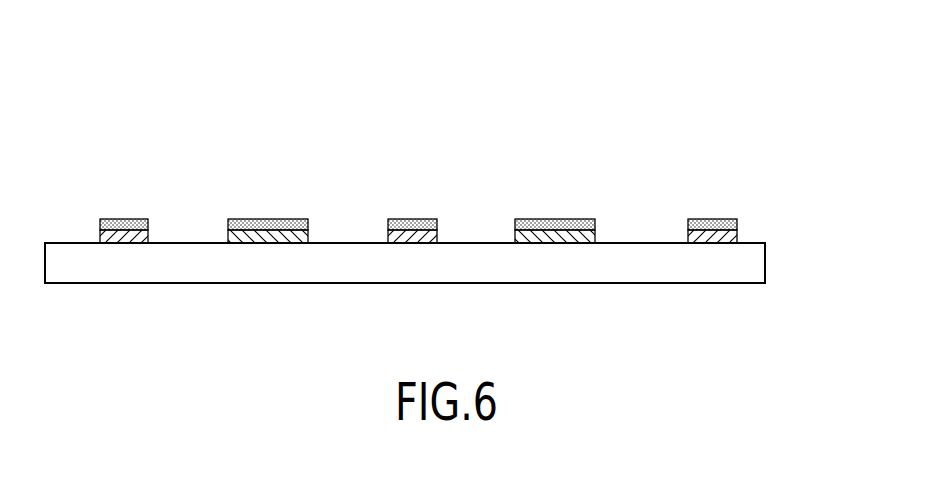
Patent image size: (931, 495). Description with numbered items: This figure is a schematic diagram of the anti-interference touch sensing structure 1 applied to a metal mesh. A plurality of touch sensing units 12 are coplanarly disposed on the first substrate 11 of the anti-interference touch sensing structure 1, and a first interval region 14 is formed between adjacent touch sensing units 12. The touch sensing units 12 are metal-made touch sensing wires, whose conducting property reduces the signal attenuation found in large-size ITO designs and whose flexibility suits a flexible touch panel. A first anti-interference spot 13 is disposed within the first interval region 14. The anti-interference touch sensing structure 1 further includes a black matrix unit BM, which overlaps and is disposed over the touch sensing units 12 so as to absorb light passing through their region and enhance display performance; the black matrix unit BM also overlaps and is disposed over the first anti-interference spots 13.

The anti-interference touch sensing structure 1 is at (127, 112).
The first substrate 11 is at (755, 263).
The touch sensing unit 12 is at (123, 236).
The first anti-interference spot 13 is at (308, 233).
The first interval region 14 is at (680, 168).
The black matrix unit BM is at (112, 219).